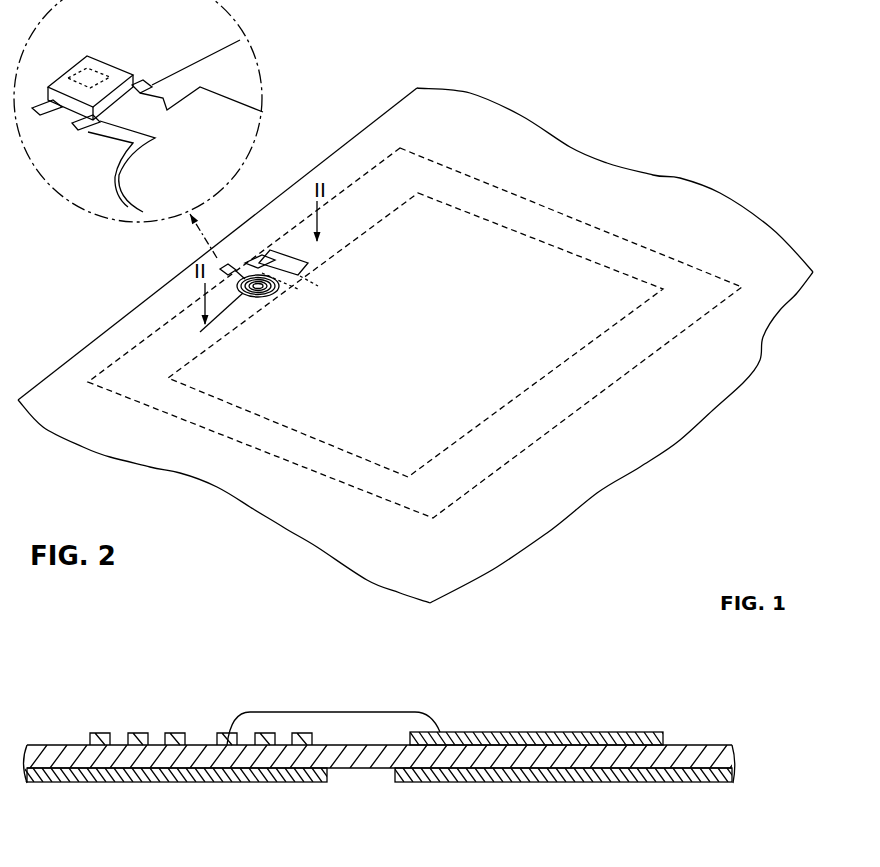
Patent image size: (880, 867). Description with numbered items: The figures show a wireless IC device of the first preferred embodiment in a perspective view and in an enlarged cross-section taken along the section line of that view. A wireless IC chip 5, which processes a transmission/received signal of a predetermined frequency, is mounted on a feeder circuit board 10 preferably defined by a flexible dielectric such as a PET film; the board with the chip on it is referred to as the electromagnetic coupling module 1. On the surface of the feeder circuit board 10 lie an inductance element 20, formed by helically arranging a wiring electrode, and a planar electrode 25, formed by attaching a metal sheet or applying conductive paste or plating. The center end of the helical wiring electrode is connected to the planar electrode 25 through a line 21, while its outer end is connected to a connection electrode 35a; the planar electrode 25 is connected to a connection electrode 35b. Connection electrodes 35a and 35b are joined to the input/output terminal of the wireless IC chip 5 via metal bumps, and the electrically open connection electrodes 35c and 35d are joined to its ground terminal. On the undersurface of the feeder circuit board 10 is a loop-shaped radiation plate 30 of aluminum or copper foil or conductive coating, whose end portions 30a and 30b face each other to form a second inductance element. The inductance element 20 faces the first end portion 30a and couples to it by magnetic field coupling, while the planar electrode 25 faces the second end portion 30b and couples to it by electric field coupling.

In FIG. 1, the electromagnetic coupling module 1 is at (469, 90).
In FIG. 2, the electromagnetic coupling module 1 is at (453, 722).
In FIG. 1, the wireless IC chip 5 is at (117, 67).
In FIG. 1, the feeder circuit board 10 is at (527, 131).
In FIG. 2, the feeder circuit board 10 is at (690, 743).
In FIG. 1, the inductance element 20 is at (257, 296).
In FIG. 2, the inductance element 20 is at (98, 732).
In FIG. 2, the line 21 is at (337, 705).
In FIG. 1, the planar electrode 25 is at (309, 270).
In FIG. 2, the planar electrode 25 is at (483, 732).
In FIG. 1, the radiation plate 30 is at (551, 415).
In FIG. 2, the radiation plate 30 is at (376, 814).
In FIG. 1, the first end portion of the radiation plate 30a is at (283, 294).
In FIG. 2, the first end portion of the radiation plate 30a is at (287, 784).
In FIG. 1, the second end portion of the radiation plate 30b is at (307, 281).
In FIG. 2, the second end portion of the radiation plate 30b is at (440, 784).
In FIG. 1, the connection electrode 35a is at (78, 128).
In FIG. 1, the connection electrode 35b is at (145, 80).
In FIG. 1, the connection electrode 35c is at (35, 100).
In FIG. 1, the connection electrode 35d is at (93, 67).